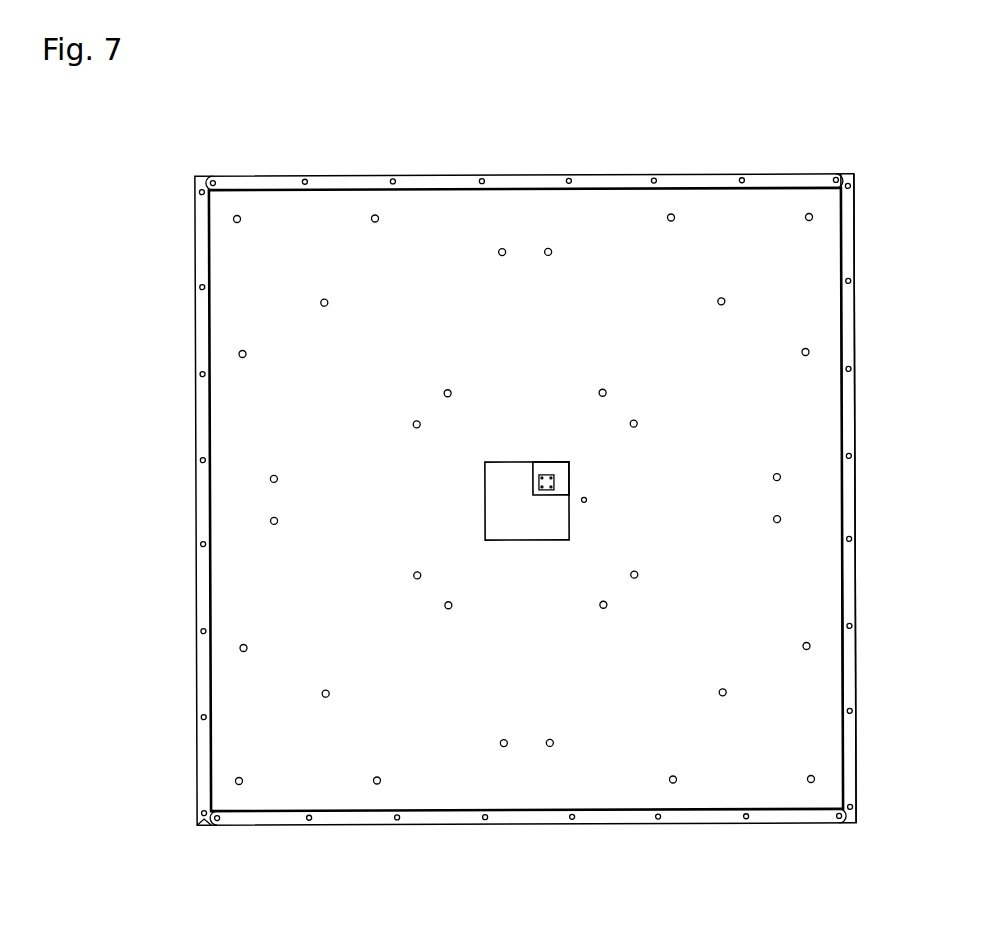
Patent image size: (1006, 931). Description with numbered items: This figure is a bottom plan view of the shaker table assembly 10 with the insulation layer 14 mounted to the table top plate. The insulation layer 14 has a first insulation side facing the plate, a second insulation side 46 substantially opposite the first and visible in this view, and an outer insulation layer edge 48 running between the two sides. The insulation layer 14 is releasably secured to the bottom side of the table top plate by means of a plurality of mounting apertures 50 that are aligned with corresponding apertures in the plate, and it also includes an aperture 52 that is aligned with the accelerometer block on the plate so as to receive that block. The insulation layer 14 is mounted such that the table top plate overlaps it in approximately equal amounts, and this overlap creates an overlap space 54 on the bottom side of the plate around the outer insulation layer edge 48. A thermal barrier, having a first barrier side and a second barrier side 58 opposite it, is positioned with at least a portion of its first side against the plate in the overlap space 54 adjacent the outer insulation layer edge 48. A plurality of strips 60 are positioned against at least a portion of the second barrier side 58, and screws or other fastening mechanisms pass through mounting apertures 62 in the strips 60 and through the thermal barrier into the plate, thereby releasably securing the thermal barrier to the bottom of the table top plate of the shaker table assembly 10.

The shaker table assembly 10 is at (866, 85).
The insulation layer 14 is at (819, 262).
The second insulation side 46 is at (792, 397).
The outer insulation layer edge 48 is at (843, 498).
The mounting apertures 50 is at (447, 391).
The aperture 52 is at (530, 524).
The overlap space 54 is at (861, 168).
The second barrier side 58 is at (200, 825).
The strips 60 is at (850, 349).
The mounting apertures 62 is at (851, 281).